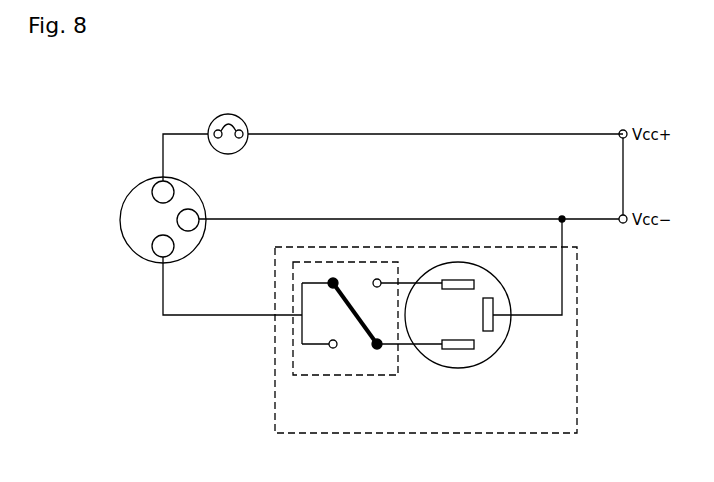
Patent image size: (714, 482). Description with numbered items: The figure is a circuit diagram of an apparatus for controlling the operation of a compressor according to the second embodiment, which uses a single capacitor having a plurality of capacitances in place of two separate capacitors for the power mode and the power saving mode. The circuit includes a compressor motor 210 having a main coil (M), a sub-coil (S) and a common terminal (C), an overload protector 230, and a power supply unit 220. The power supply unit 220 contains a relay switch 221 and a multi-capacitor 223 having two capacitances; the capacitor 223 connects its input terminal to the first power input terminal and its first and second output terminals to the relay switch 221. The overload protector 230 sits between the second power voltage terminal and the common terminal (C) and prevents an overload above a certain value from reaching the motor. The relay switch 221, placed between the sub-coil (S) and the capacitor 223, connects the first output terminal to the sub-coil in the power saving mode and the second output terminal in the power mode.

The compressor motor 210 is at (120, 220).
The power supply unit 220 is at (577, 358).
The relay switch 221 is at (346, 375).
The multi-capacitor 223 is at (503, 340).
The overload protector 230 is at (226, 113).